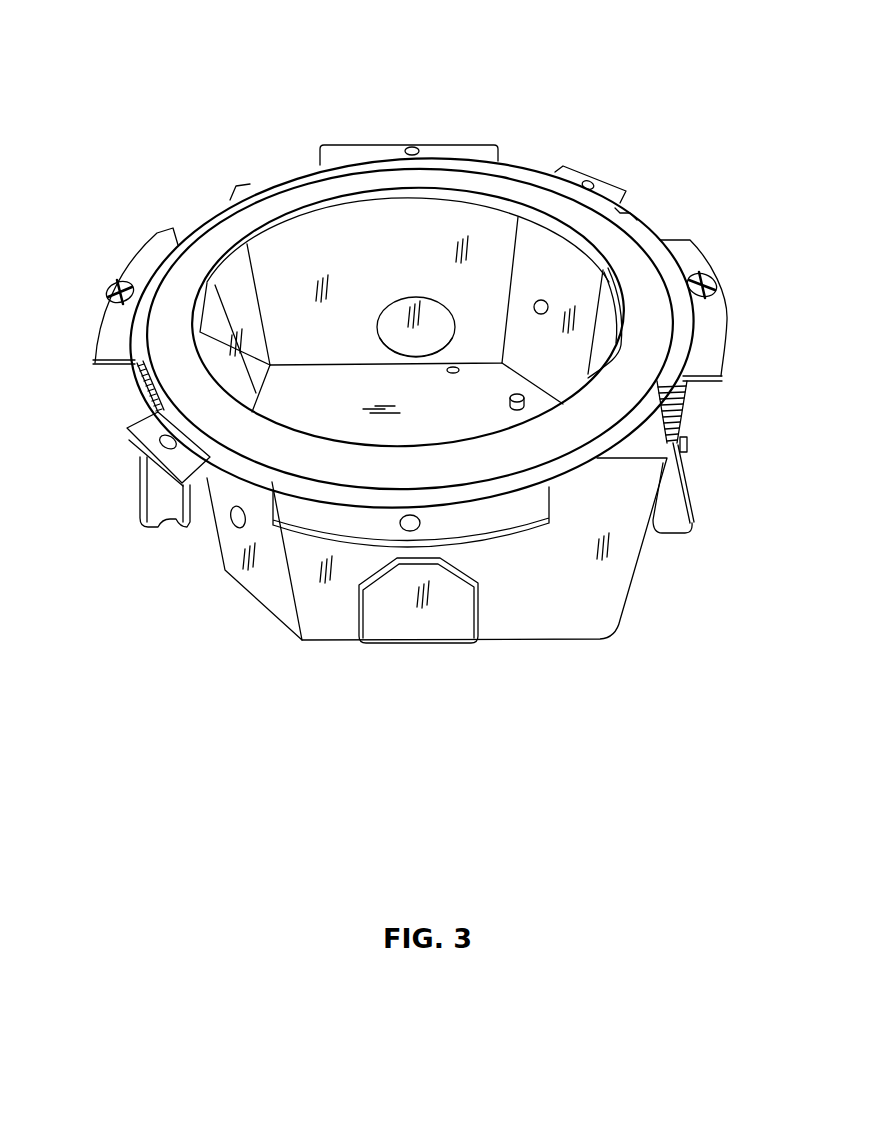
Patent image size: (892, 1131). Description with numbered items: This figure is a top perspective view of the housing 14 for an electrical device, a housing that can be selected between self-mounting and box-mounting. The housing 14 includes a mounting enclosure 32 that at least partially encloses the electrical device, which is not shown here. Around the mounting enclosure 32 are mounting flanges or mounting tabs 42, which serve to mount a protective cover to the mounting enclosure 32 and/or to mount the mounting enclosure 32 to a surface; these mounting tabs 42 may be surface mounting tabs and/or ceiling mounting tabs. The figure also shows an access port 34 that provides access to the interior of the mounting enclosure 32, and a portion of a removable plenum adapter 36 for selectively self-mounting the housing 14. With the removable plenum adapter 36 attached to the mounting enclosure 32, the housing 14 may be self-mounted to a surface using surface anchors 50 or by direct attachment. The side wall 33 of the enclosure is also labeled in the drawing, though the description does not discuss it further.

The housing 14 is at (648, 587).
The mounting enclosure 32 is at (217, 40).
The side wall of enclosure 33 is at (262, 592).
The access port 34 is at (423, 308).
The removable plenum adapter 36 is at (397, 607).
The mounting tabs 42 is at (127, 437).
The surface anchors 50 is at (683, 447).